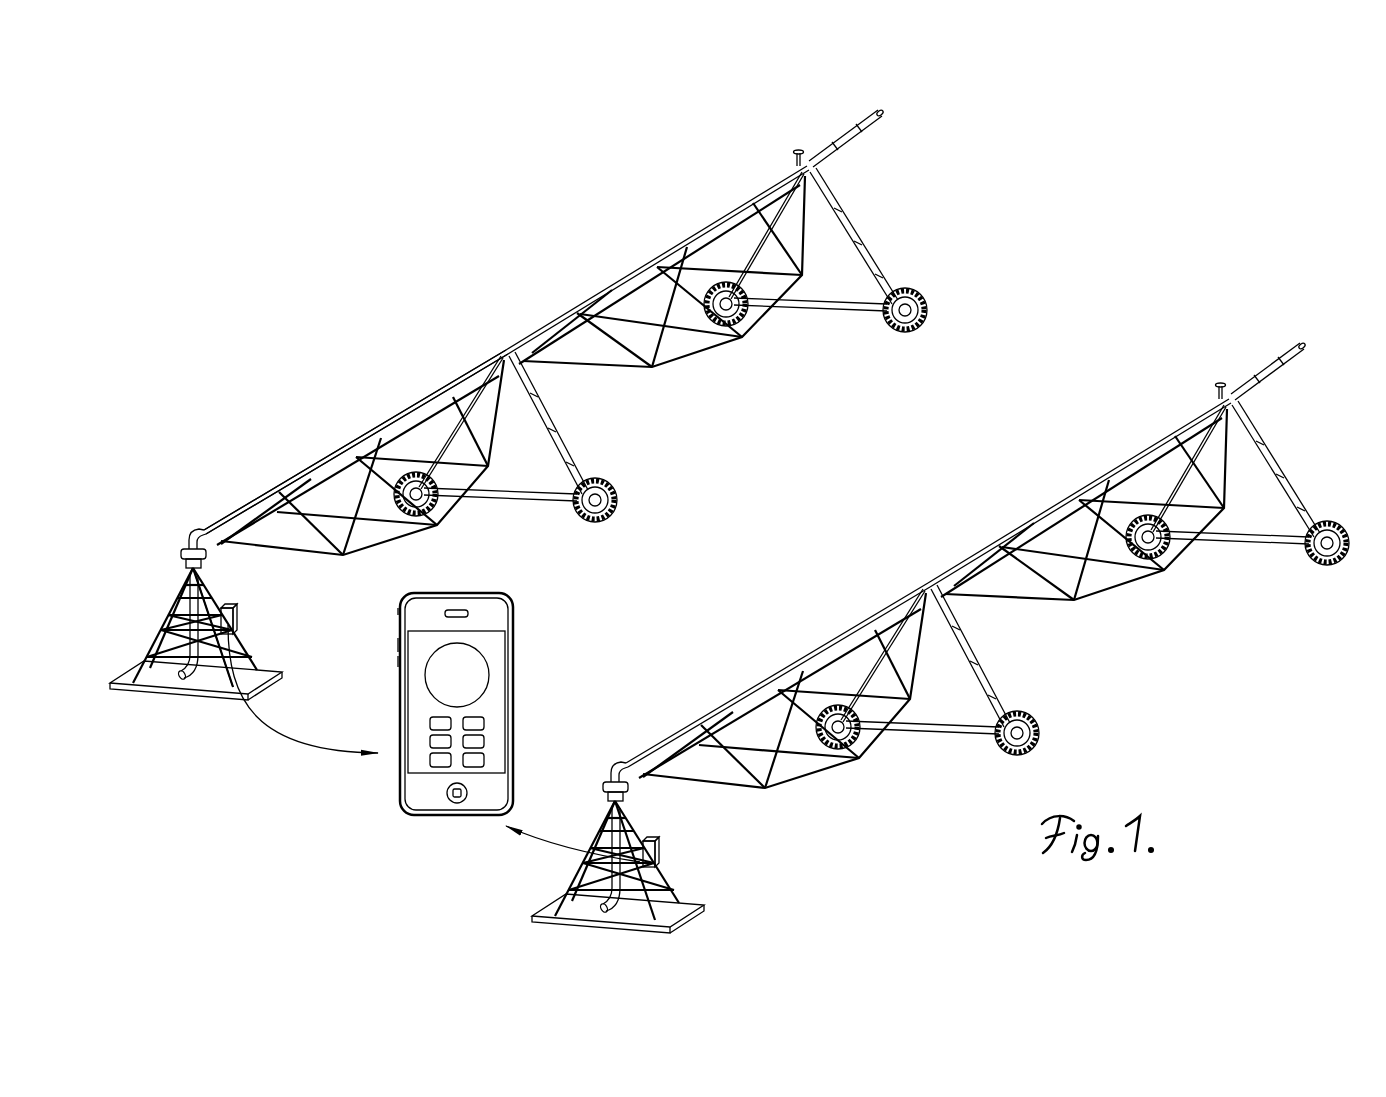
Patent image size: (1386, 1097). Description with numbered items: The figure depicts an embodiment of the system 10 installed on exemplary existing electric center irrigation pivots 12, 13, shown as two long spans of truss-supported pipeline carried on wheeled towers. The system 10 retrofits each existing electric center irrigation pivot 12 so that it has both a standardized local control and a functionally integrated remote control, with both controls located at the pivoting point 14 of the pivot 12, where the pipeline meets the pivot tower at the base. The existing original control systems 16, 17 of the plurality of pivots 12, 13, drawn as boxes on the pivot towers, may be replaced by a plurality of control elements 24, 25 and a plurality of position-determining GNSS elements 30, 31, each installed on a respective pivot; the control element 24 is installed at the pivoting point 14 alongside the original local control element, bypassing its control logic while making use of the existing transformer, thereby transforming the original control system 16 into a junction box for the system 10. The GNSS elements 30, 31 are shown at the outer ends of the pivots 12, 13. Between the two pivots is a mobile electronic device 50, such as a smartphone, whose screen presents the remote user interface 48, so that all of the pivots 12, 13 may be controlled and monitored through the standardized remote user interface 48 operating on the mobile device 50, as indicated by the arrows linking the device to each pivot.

The system 10 is at (233, 672).
The electric center irrigation pivot 12 is at (535, 333).
The electric center irrigation pivot 13 is at (987, 565).
The pivoting point 14 is at (156, 513).
The original control system 16 is at (236, 617).
The original control system 17 is at (658, 848).
The control element 24 is at (232, 631).
The control element 25 is at (658, 847).
The position-determining (GNSS) element 30 is at (798, 152).
The position-determining (GNSS) element 31 is at (1220, 385).
The remote user interface 48 is at (491, 702).
The electronic device 50 is at (515, 691).